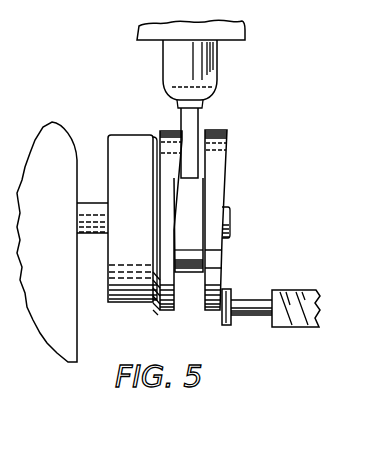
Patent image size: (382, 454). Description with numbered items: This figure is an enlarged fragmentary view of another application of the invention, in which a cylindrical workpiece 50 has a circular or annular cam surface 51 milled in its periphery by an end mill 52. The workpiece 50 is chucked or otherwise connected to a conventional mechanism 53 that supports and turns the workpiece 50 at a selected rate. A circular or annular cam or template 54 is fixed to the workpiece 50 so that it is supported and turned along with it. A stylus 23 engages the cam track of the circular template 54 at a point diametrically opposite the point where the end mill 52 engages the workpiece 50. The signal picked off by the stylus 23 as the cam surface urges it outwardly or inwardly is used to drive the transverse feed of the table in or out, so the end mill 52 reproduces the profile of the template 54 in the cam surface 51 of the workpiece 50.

The stylus 23 is at (232, 297).
The cylindrical workpiece 50 is at (174, 152).
The circular or annular cam surface 51 is at (182, 277).
The end mill 52 is at (193, 127).
The conventional mechanism 53 is at (59, 220).
The circular or annular cam or template 54 is at (222, 174).